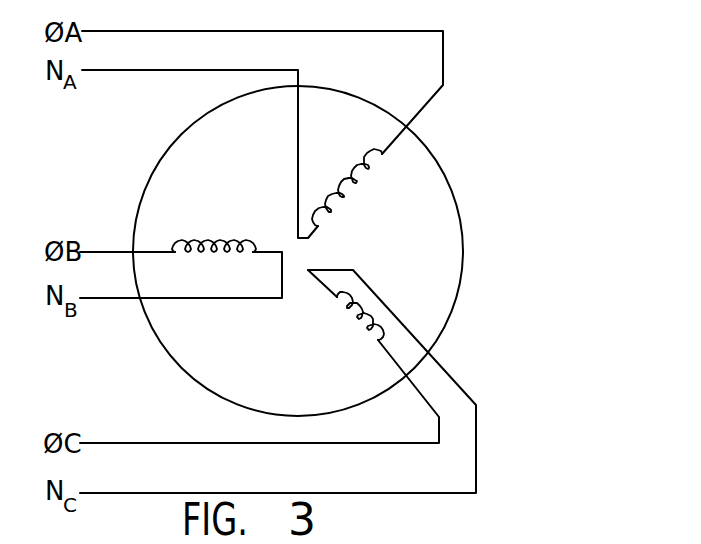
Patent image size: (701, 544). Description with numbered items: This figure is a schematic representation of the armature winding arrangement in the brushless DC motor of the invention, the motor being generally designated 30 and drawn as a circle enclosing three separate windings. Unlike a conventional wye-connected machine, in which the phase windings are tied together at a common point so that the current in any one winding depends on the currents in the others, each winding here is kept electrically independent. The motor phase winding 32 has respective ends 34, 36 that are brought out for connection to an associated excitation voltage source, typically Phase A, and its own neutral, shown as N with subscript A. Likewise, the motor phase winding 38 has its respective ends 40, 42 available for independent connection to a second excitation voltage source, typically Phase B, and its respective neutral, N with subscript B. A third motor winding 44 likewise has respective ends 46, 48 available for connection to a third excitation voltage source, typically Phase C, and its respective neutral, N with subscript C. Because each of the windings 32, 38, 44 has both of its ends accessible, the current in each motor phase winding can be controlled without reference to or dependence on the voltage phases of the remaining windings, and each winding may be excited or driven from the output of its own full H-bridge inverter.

The motor 30 is at (481, 103).
The motor phase winding 32 is at (345, 180).
The end 34 is at (392, 143).
The end 36 is at (317, 227).
The motor phase winding 38 is at (222, 244).
The end 40 is at (155, 249).
The end 42 is at (157, 300).
The motor winding 44 is at (352, 322).
The end 46 is at (388, 360).
The end 48 is at (316, 283).